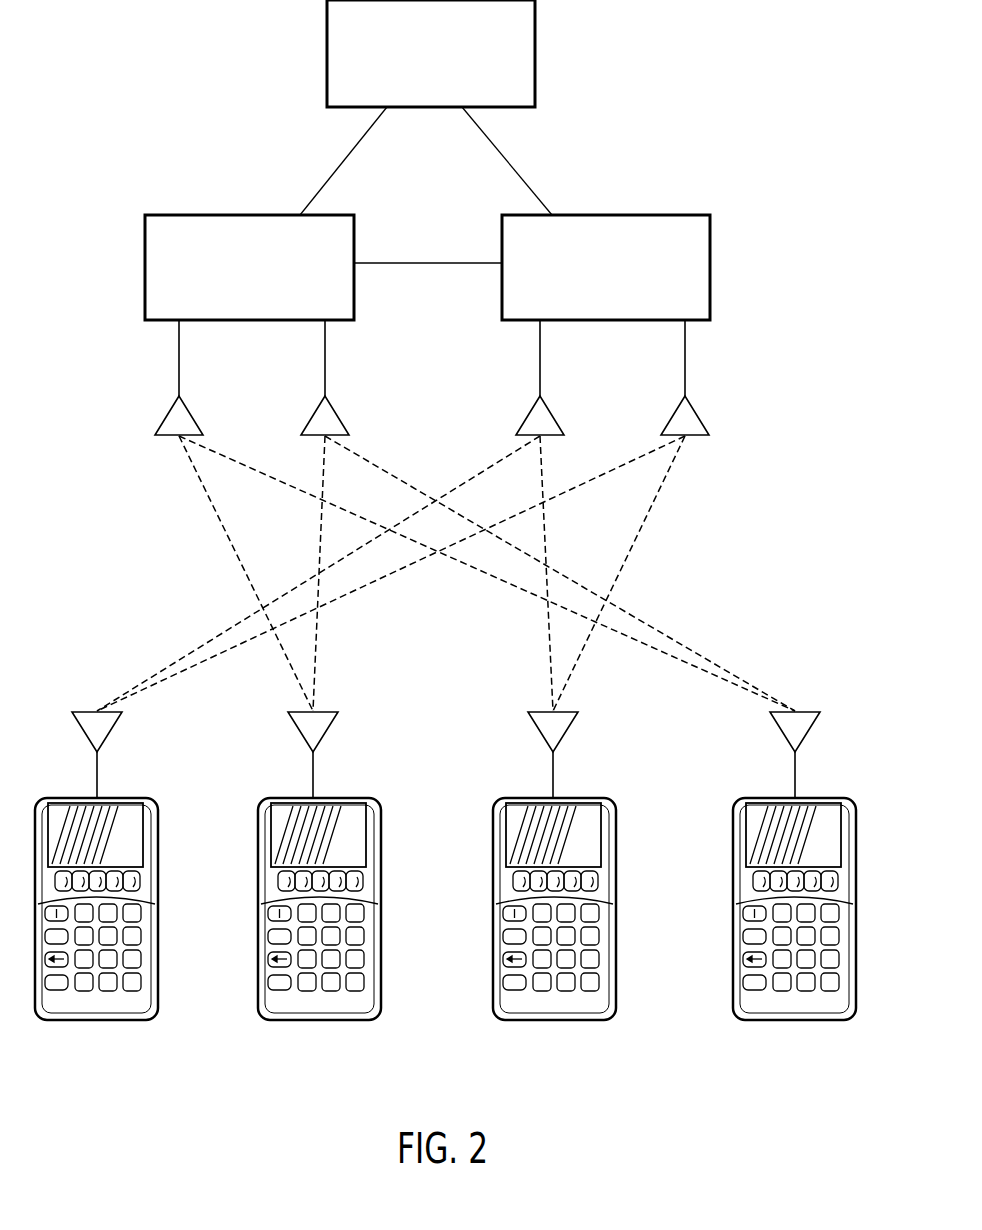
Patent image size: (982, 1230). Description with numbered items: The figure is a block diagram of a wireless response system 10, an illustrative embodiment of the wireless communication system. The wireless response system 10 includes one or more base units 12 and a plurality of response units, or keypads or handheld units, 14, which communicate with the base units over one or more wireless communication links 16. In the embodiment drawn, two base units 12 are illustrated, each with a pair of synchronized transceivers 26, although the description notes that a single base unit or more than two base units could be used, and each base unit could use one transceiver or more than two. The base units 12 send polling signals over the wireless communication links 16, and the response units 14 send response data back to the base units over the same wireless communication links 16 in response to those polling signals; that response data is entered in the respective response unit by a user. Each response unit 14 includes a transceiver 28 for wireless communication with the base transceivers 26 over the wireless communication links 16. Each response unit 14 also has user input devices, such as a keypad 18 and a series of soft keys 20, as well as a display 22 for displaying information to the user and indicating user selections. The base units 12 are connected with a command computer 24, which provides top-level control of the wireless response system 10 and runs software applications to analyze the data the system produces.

The wireless response system 10 is at (61, 540).
The base unit 12 is at (196, 198).
The response unit 14 is at (458, 883).
The wireless communication link 16 is at (446, 573).
The keypad 18 is at (473, 947).
The soft keys 20 is at (478, 872).
The display 22 is at (474, 834).
The command computer 24 is at (535, 33).
The transceiver 26 is at (179, 378).
The transceiver 28 is at (434, 755).